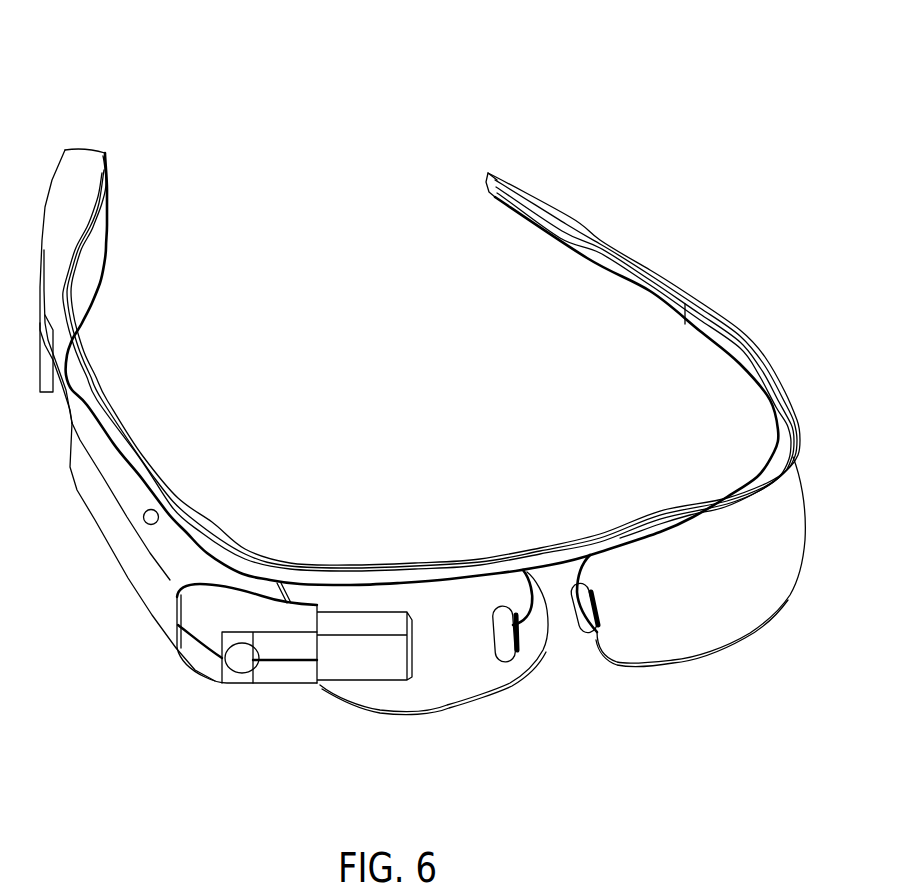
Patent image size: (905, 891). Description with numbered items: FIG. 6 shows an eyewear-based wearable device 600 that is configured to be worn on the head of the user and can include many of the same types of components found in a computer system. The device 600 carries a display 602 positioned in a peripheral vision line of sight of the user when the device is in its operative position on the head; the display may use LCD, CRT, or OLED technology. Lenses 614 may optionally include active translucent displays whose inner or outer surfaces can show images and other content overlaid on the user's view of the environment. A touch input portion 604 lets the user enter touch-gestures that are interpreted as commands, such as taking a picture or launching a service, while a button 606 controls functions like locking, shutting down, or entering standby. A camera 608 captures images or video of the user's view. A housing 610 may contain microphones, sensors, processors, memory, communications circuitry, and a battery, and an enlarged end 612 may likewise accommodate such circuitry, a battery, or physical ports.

The device 600 is at (422, 398).
The display 602 is at (378, 667).
The touch input portion 604 is at (103, 522).
The button 606 is at (157, 513).
The camera 608 is at (242, 661).
The housing 610 is at (172, 568).
The enlarged end 612 is at (107, 226).
The lenses 614 is at (530, 657).